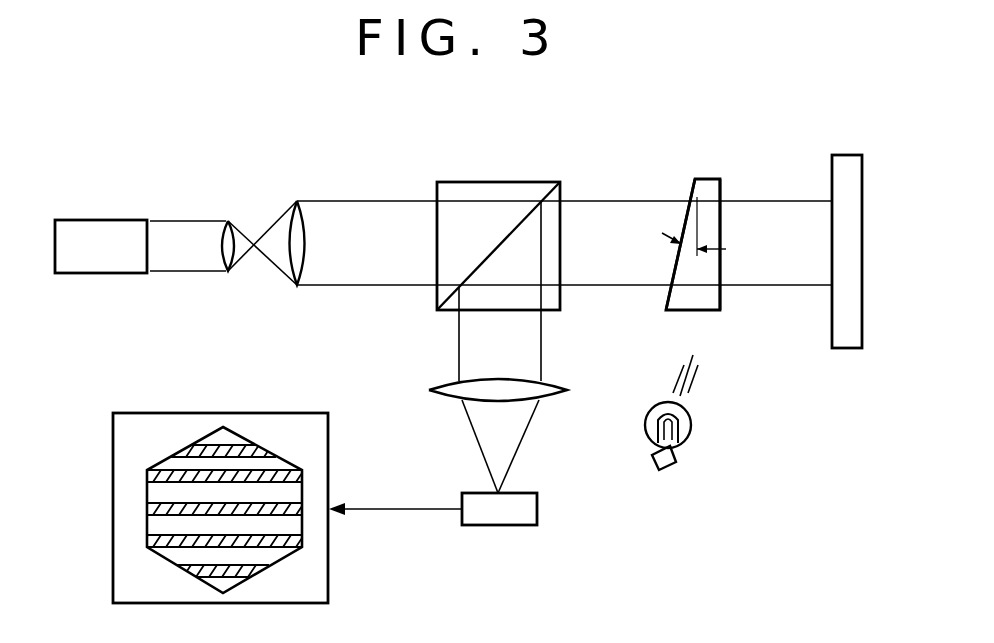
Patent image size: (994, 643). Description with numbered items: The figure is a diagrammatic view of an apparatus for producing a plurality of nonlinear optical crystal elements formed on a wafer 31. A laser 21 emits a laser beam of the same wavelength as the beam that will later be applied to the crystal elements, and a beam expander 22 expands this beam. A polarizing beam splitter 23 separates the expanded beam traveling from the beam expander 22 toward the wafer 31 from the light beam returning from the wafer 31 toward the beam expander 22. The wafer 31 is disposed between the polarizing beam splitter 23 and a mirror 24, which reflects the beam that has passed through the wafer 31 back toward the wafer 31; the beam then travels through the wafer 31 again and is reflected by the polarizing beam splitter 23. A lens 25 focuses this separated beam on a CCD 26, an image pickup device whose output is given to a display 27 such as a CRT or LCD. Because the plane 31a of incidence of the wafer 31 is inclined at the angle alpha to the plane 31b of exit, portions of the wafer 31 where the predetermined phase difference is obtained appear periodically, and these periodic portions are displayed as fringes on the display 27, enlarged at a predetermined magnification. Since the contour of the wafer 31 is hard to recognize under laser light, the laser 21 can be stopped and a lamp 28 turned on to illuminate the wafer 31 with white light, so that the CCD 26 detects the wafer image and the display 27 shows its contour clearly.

The laser 21 is at (93, 220).
The beam expander 22 is at (300, 290).
The polarizing beam splitter 23 is at (479, 182).
The mirror 24 is at (839, 155).
The lens 25 is at (440, 383).
The CCD 26 is at (507, 525).
The display 27 is at (330, 584).
The lamp 28 is at (688, 440).
The wafer 31 is at (700, 198).
The plane of incidence 31a is at (668, 297).
The plane of exit 31b is at (722, 295).